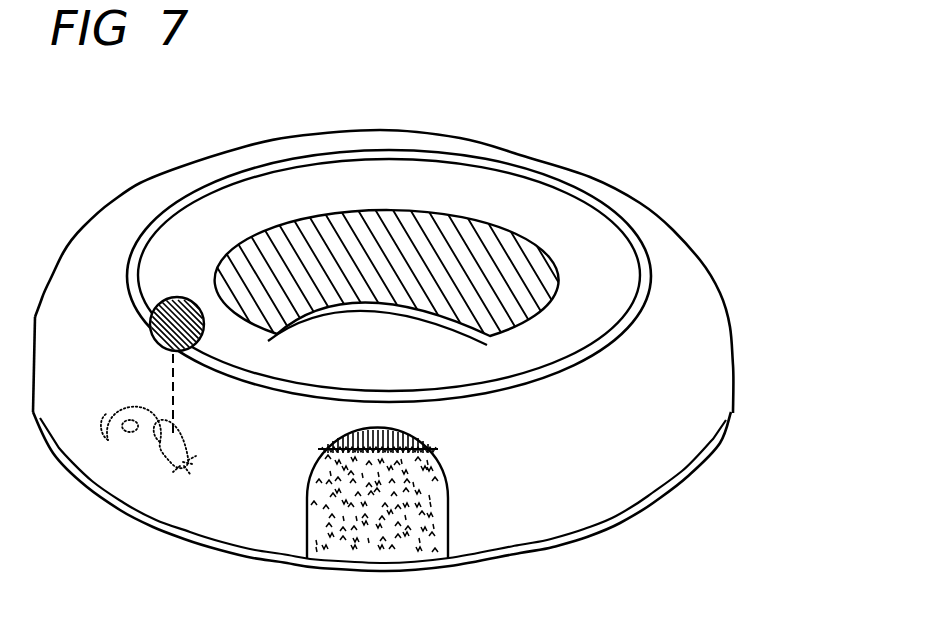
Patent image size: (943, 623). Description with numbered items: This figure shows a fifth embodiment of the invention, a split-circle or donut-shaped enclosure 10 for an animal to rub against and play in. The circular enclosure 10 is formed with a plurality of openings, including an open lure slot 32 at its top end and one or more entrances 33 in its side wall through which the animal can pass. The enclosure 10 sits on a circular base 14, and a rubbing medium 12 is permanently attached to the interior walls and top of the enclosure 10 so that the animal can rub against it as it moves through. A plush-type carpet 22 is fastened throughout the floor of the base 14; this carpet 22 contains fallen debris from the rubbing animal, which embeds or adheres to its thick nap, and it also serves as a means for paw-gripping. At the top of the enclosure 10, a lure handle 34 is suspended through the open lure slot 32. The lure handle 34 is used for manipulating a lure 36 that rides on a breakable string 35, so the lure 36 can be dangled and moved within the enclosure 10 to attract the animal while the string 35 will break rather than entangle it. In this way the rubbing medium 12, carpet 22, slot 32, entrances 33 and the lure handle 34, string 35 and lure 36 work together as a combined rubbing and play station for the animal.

The enclosure 10 is at (622, 131).
The rubbing medium 12 is at (412, 441).
The circular base 14 is at (522, 553).
The carpet 22 is at (420, 525).
The open lure slot 32 is at (131, 282).
The entrances 33 is at (448, 482).
The lure handle 34 is at (149, 330).
The breakable string 35 is at (170, 377).
The lure 36 is at (181, 435).